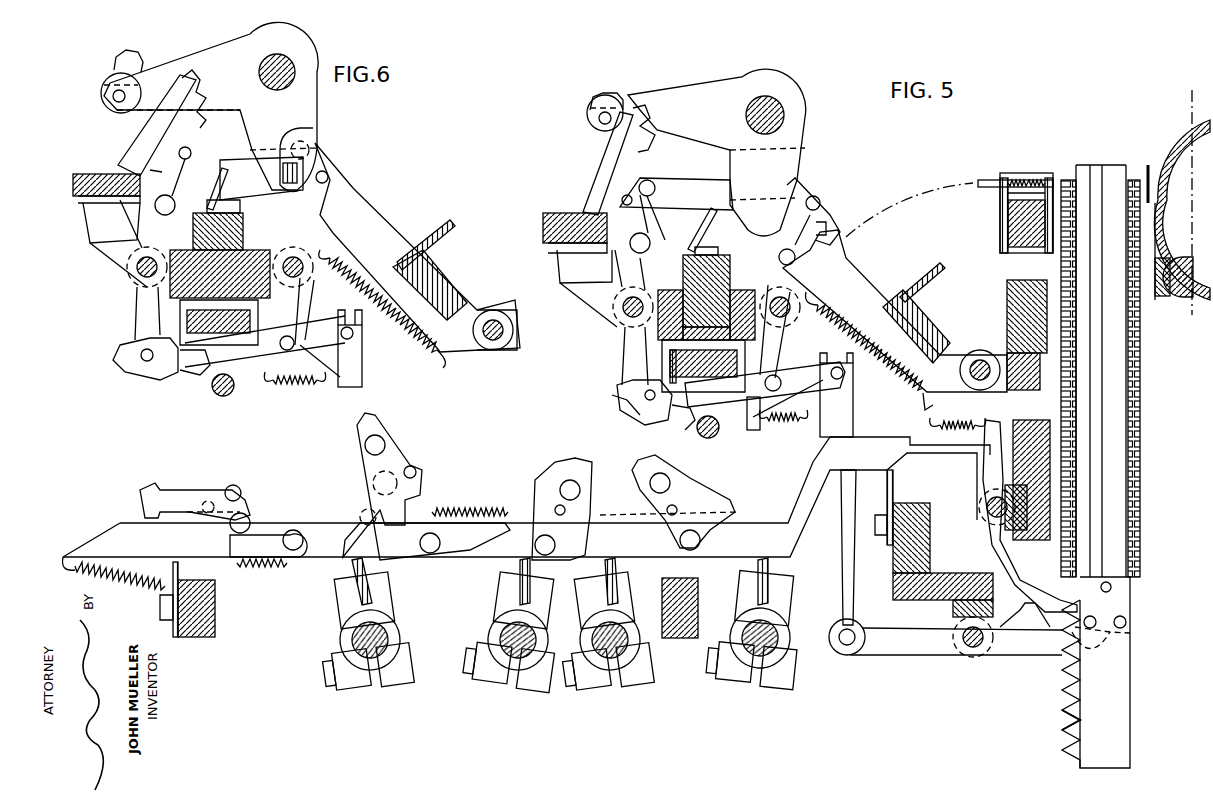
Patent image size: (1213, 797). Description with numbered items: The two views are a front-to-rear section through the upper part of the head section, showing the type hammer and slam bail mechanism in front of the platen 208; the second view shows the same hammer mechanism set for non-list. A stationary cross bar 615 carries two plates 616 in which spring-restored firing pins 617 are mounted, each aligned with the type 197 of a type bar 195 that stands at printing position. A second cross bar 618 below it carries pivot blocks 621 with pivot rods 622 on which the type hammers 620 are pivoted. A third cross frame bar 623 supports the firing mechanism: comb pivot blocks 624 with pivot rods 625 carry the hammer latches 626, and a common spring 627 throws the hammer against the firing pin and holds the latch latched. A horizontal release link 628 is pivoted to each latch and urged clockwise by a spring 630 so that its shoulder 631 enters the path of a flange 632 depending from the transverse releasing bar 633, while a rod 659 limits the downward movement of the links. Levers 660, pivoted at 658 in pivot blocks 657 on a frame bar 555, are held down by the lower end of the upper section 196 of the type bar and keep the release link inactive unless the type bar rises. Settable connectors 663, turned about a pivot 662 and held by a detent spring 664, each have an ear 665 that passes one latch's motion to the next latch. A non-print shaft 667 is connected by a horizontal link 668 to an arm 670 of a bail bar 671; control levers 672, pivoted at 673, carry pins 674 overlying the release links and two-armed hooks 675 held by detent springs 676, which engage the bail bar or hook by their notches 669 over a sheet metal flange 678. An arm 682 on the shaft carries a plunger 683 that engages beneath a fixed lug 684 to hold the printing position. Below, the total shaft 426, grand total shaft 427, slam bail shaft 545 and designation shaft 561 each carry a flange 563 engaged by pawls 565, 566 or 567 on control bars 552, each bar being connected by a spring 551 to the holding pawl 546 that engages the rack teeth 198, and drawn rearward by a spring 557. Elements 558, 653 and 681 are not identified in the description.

In FIG. 5, the type bar 195 is at (1120, 725).
In FIG. 5, the upper section of the type bar 196 is at (1120, 633).
In FIG. 5, the type 197 is at (1137, 373).
In FIG. 5, the rack teeth 198 is at (1063, 743).
In FIG. 5, the platen 208 is at (1176, 132).
In FIG. 5, the total shaft 426 is at (623, 645).
In FIG. 5, the grand total shaft 427 is at (777, 650).
In FIG. 5, the slam bail shaft 545 is at (503, 640).
In FIG. 5, the slam bail or holding pawl 546 is at (997, 538).
In FIG. 5, the spring 551 is at (947, 423).
In FIG. 5, the control bar 552 is at (793, 480).
In FIG. 5, the frame bar 555 is at (903, 503).
In FIG. 5, the spring 557 is at (140, 577).
In FIG. 5, the lever 558 is at (195, 497).
In FIG. 5, the designation shaft 561 is at (350, 647).
In FIG. 5, the flange 563 is at (347, 595).
In FIG. 5, the pawl 565 is at (710, 507).
In FIG. 5, the pawl 566 is at (570, 470).
In FIG. 5, the pawl 567 is at (402, 550).
In FIG. 5, the stationary cross bar 615 is at (1005, 217).
In FIG. 5, the plate 616 is at (1047, 182).
In FIG. 5, the firing pin 617 is at (982, 180).
In FIG. 5, the second cross bar 618 is at (1017, 297).
In FIG. 6, the type hammer 620 is at (363, 212).
In FIG. 5, the type hammer 620 is at (850, 273).
In FIG. 5, the pivot block 621 is at (1007, 343).
In FIG. 6, the pivot rod 622 is at (490, 323).
In FIG. 5, the pivot rod 622 is at (980, 363).
In FIG. 6, the third cross frame bar 623 is at (227, 237).
In FIG. 5, the third cross frame bar 623 is at (700, 275).
In FIG. 5, the comb pivot block 624 is at (763, 273).
In FIG. 6, the pivot rod 625 is at (293, 278).
In FIG. 5, the pivot rod 625 is at (793, 313).
In FIG. 6, the hammer latch 626 is at (308, 328).
In FIG. 5, the hammer latch 626 is at (780, 360).
In FIG. 5, the common spring 627 is at (903, 373).
In FIG. 5, the release link 628 is at (737, 420).
In FIG. 5, the spring 630 is at (790, 425).
In FIG. 6, the shoulder 631 is at (203, 367).
In FIG. 5, the shoulder 631 is at (687, 413).
In FIG. 5, the flange 632 is at (673, 378).
In FIG. 6, the releasing bar 633 is at (187, 322).
In FIG. 5, the releasing bar 633 is at (670, 357).
In FIG. 6, the block 653 is at (430, 262).
In FIG. 5, the block 653 is at (913, 307).
In FIG. 5, the pivot block 657 is at (953, 610).
In FIG. 5, the pivot 658 is at (977, 650).
In FIG. 5, the rod 659 is at (707, 438).
In FIG. 5, the lever 660 is at (940, 653).
In FIG. 5, the pivot 662 is at (813, 203).
In FIG. 5, the settable connector 663 is at (790, 183).
In FIG. 5, the detent spring 664 is at (823, 217).
In FIG. 6, the ear 665 is at (313, 123).
In FIG. 6, the non-print shaft 667 is at (287, 65).
In FIG. 5, the non-print shaft 667 is at (780, 112).
In FIG. 6, the horizontal link 668 is at (245, 160).
In FIG. 5, the horizontal link 668 is at (673, 217).
In FIG. 6, the notch 669 is at (192, 78).
In FIG. 5, the notch 669 is at (657, 137).
In FIG. 6, the arm 670 is at (90, 222).
In FIG. 6, the bail bar 671 is at (73, 183).
In FIG. 5, the bail bar 671 is at (560, 215).
In FIG. 6, the control lever 672 is at (97, 247).
In FIG. 5, the control lever 672 is at (623, 268).
In FIG. 6, the pivot 673 is at (140, 272).
In FIG. 5, the pivot 673 is at (633, 307).
In FIG. 6, the pin 674 is at (112, 352).
In FIG. 5, the pin 674 is at (627, 407).
In FIG. 6, the two-armed hook 675 is at (147, 133).
In FIG. 5, the two-armed hook 675 is at (608, 158).
In FIG. 6, the detent spring 676 is at (150, 207).
In FIG. 5, the detent spring 676 is at (643, 183).
In FIG. 6, the sheet metal flange 678 is at (223, 177).
In FIG. 5, the sheet metal flange 678 is at (700, 210).
In FIG. 5, the lever 681 is at (843, 573).
In FIG. 6, the arm 682 is at (168, 70).
In FIG. 5, the arm 682 is at (662, 93).
In FIG. 6, the plunger 683 is at (107, 92).
In FIG. 5, the plunger 683 is at (588, 117).
In FIG. 6, the fixed lug 684 is at (112, 63).
In FIG. 5, the fixed lug 684 is at (607, 93).